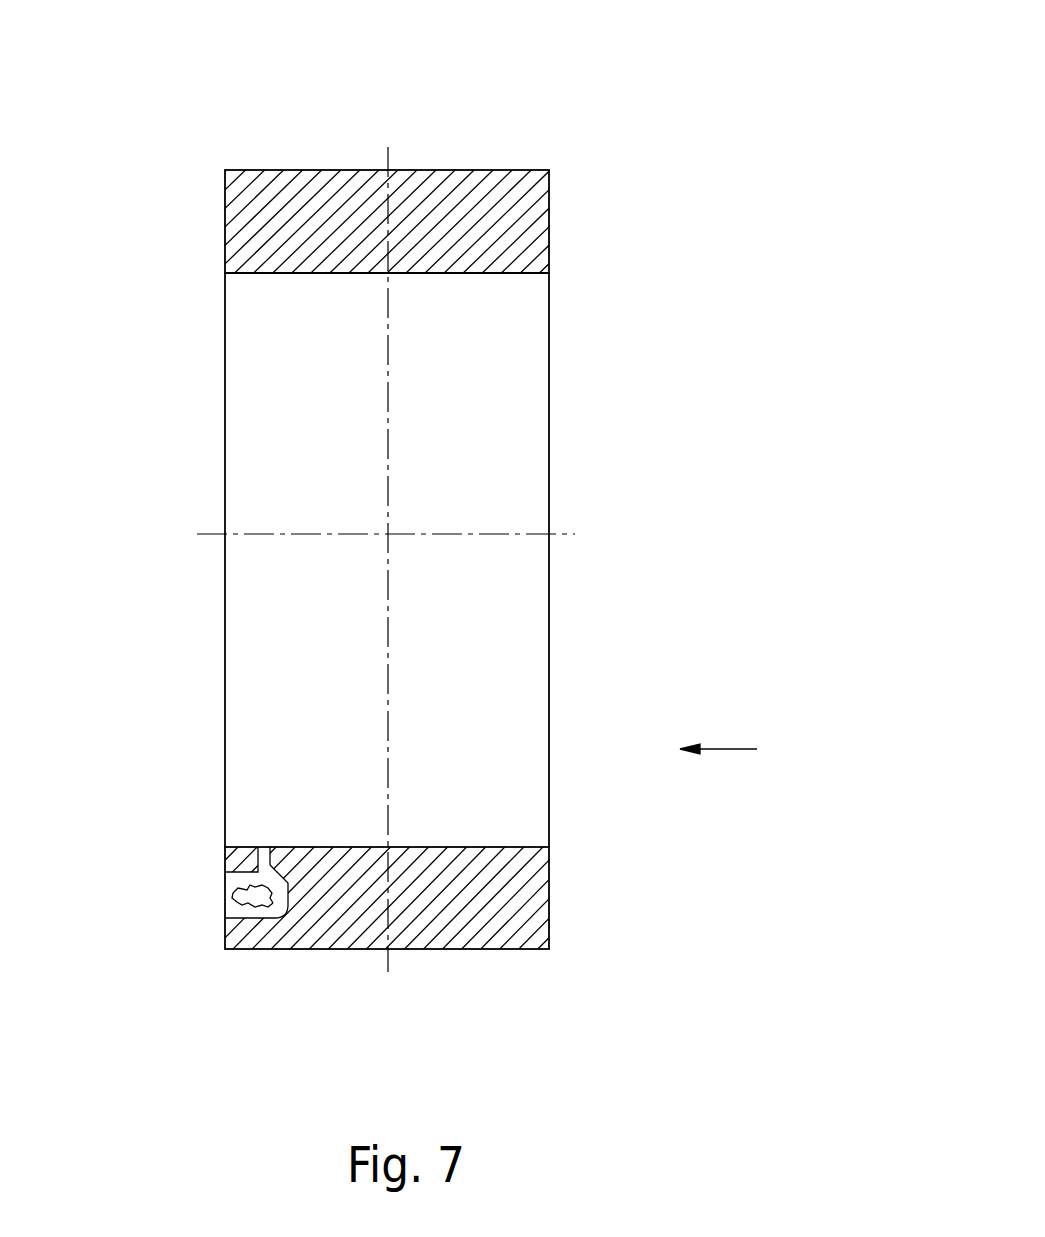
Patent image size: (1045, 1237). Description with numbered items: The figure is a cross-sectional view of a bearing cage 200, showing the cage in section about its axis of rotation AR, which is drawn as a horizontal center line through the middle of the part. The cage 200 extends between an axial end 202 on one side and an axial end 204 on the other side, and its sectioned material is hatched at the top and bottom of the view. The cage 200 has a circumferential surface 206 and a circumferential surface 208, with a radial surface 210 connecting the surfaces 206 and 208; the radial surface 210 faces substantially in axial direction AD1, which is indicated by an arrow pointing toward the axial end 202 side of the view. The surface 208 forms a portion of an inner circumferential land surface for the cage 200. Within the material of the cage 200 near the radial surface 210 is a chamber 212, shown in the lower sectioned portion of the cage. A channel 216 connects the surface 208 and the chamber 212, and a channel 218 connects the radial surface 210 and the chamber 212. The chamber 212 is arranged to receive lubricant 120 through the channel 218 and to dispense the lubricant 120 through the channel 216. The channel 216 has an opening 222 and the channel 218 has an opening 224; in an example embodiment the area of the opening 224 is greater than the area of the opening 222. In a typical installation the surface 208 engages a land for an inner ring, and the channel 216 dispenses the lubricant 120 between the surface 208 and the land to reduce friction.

The bearing cage 200 is at (611, 131).
The axial end 202 is at (208, 209).
The axial end 204 is at (565, 200).
The circumferential surface 206 is at (242, 170).
The circumferential surface 208 is at (280, 273).
The radial surface 210 is at (225, 930).
The chamber 212 is at (298, 873).
The channel 216 is at (284, 862).
The channel 218 is at (245, 882).
The opening 222 is at (260, 850).
The opening 224 is at (225, 897).
The lubricant 120 is at (278, 900).
The axis of rotation AR is at (217, 533).
The axial direction AD1 is at (725, 749).